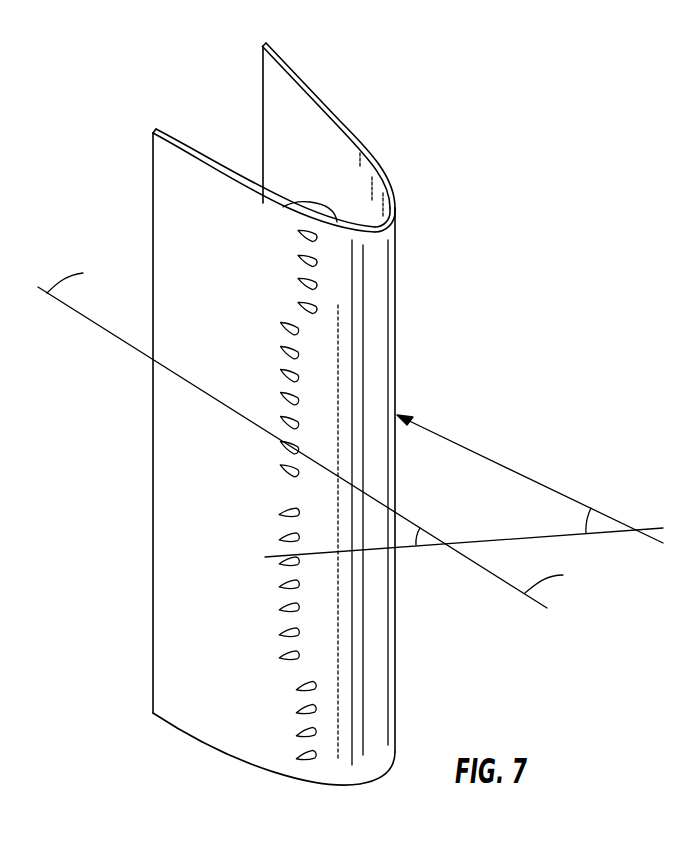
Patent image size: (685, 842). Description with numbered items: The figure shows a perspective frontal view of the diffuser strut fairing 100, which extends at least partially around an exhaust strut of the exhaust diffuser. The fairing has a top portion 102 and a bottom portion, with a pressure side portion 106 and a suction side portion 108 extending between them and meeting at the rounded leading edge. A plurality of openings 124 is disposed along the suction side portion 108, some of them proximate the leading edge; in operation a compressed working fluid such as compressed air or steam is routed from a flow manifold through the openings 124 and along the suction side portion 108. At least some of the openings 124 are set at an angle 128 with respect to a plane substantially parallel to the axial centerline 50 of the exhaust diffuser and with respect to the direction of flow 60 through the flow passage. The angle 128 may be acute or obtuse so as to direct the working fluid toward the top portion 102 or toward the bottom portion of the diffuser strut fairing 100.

The diffuser strut fairing 100 is at (412, 270).
The top portion 102 is at (380, 158).
The pressure side portion 106 is at (328, 92).
The suction side portion 108 is at (185, 173).
The openings 124 is at (300, 403).
The axial centerline 50 is at (102, 330).
The direction of flow 60 is at (490, 458).
The angle 128 is at (582, 523).